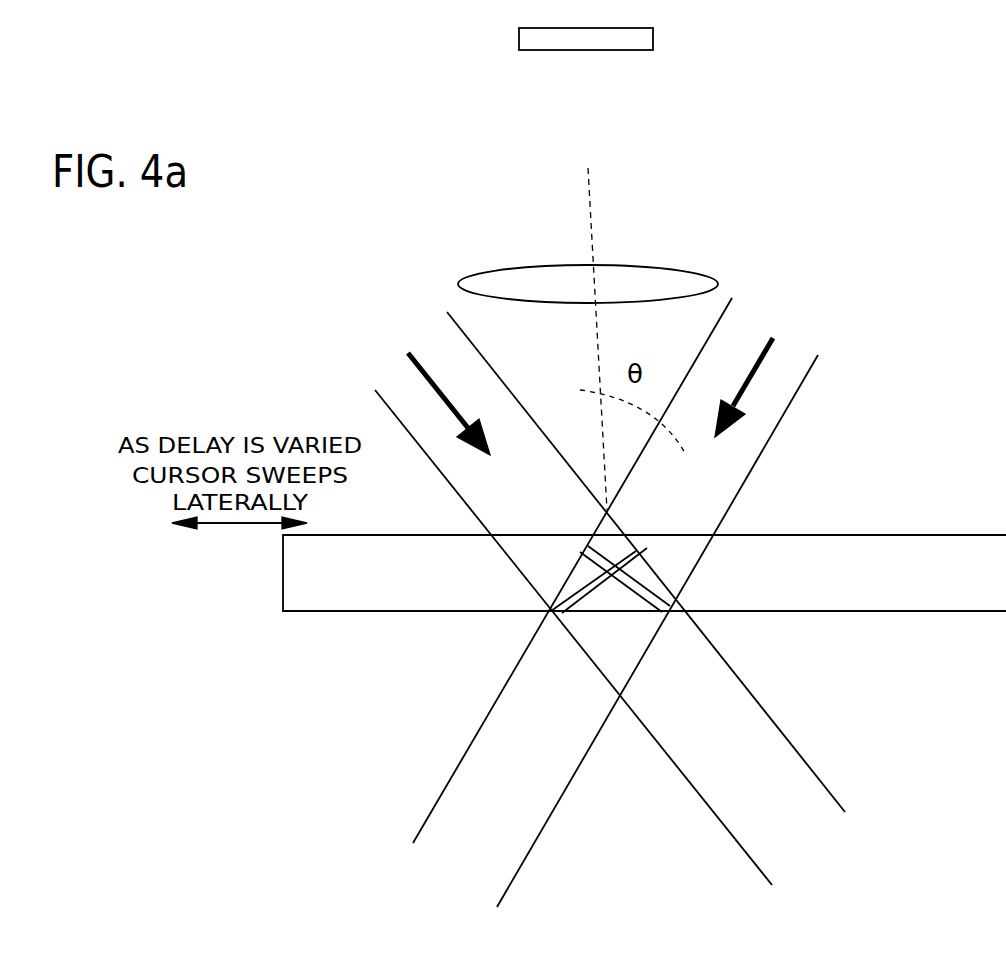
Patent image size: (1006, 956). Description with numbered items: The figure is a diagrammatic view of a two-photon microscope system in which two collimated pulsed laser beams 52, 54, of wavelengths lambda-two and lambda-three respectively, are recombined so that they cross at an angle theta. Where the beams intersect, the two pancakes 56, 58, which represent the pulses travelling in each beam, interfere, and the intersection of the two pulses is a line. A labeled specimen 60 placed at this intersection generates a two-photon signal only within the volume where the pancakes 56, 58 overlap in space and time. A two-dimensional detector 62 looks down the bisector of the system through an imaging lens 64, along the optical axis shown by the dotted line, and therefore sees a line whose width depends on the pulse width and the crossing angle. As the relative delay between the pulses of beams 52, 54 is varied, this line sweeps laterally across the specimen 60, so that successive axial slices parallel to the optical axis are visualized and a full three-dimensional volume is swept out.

The collimated pulsed laser beam 52 is at (390, 412).
The collimated pulsed laser beam 54 is at (793, 398).
The pancake 56 is at (633, 553).
The pancake 58 is at (648, 602).
The specimen 60 is at (897, 611).
The two-dimensional detector 62 is at (653, 33).
The imaging lens 64 is at (705, 273).